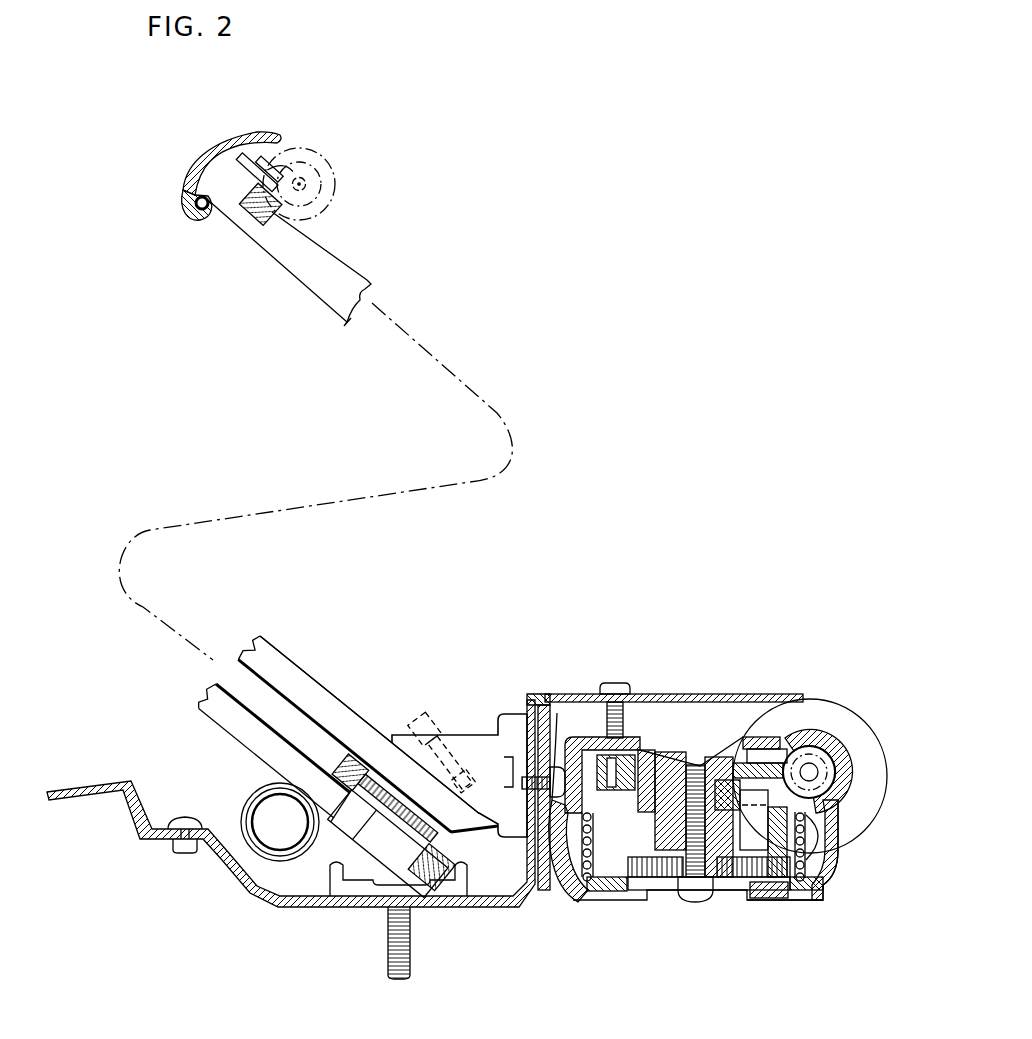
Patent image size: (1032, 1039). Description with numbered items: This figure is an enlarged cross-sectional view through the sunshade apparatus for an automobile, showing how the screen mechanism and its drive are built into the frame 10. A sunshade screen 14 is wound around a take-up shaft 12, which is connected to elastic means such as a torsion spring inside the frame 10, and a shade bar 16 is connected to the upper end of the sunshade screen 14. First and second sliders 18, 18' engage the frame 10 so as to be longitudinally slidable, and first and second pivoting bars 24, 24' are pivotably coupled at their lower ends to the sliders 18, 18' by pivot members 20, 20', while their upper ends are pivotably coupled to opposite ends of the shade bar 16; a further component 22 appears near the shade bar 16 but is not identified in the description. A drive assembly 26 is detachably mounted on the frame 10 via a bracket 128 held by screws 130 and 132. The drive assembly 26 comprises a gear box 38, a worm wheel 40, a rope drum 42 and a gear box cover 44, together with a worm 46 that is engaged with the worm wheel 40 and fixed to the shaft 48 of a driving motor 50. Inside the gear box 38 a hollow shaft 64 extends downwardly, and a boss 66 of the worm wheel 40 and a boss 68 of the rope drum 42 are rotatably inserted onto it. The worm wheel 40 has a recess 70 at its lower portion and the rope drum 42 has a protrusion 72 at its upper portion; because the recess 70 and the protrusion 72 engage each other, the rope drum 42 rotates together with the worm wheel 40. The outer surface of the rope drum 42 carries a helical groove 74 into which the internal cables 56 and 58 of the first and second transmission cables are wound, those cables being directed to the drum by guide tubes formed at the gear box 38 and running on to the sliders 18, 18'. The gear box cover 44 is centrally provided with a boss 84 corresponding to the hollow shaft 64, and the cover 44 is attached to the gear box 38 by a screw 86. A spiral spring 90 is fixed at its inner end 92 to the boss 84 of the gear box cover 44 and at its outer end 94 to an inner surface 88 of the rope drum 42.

The frame 10 is at (488, 909).
The take-up shaft 12 is at (247, 811).
The sunshade screen 14 is at (287, 280).
The shade bar 16 is at (227, 162).
The first slider 18 is at (387, 884).
The second slider 18' is at (459, 754).
The pivot member 20 is at (392, 854).
The pivot member 20' is at (442, 737).
The hook bracket 22 is at (236, 157).
The first pivoting bar 24 is at (309, 459).
The second pivoting bar 24' is at (379, 734).
The drive assembly 26 is at (846, 681).
The gear box 38 is at (707, 760).
The worm wheel 40 is at (737, 757).
The rope drum 42 is at (838, 820).
The gear box cover 44 is at (787, 900).
The worm 46 is at (818, 769).
The shaft 48 is at (842, 752).
The driving motor 50 is at (887, 762).
The internal cable 56 is at (560, 865).
The internal cable 58 is at (822, 855).
The hollow shaft 64 is at (658, 883).
The boss 66 is at (647, 765).
The boss 68 is at (615, 883).
The recess 70 is at (766, 730).
The protrusion 72 is at (755, 903).
The helical groove 74 is at (583, 887).
The boss 84 is at (710, 893).
The screw 86 is at (693, 765).
The inner surface 88 is at (817, 877).
The spiral spring 90 is at (770, 904).
The inner end 92 is at (675, 900).
The outer end 94 is at (800, 903).
The bracket 128 is at (562, 696).
The screw 130 is at (609, 682).
The screw 132 is at (534, 700).